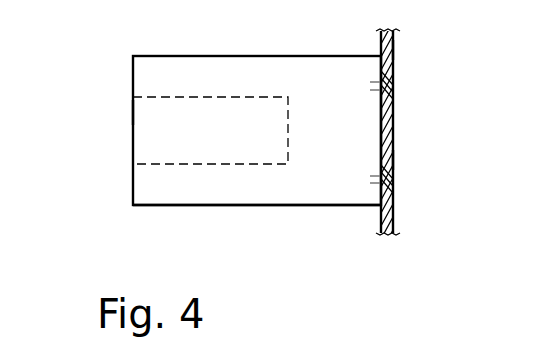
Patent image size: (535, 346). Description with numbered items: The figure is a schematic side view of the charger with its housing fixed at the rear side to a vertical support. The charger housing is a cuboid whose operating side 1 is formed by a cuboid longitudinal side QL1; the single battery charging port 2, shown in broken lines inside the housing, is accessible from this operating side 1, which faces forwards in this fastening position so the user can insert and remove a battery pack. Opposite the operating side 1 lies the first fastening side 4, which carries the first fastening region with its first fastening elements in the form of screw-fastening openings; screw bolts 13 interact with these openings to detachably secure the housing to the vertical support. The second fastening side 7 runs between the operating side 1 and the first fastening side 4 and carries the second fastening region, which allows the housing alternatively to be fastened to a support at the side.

The operating side 1 is at (133, 183).
The battery charging port 2 is at (133, 153).
The cuboid longitudinal side QL1 is at (133, 113).
The first fastening side 4 is at (395, 129).
The second fastening side 7 is at (295, 207).
The screw bolt 13 is at (372, 85).